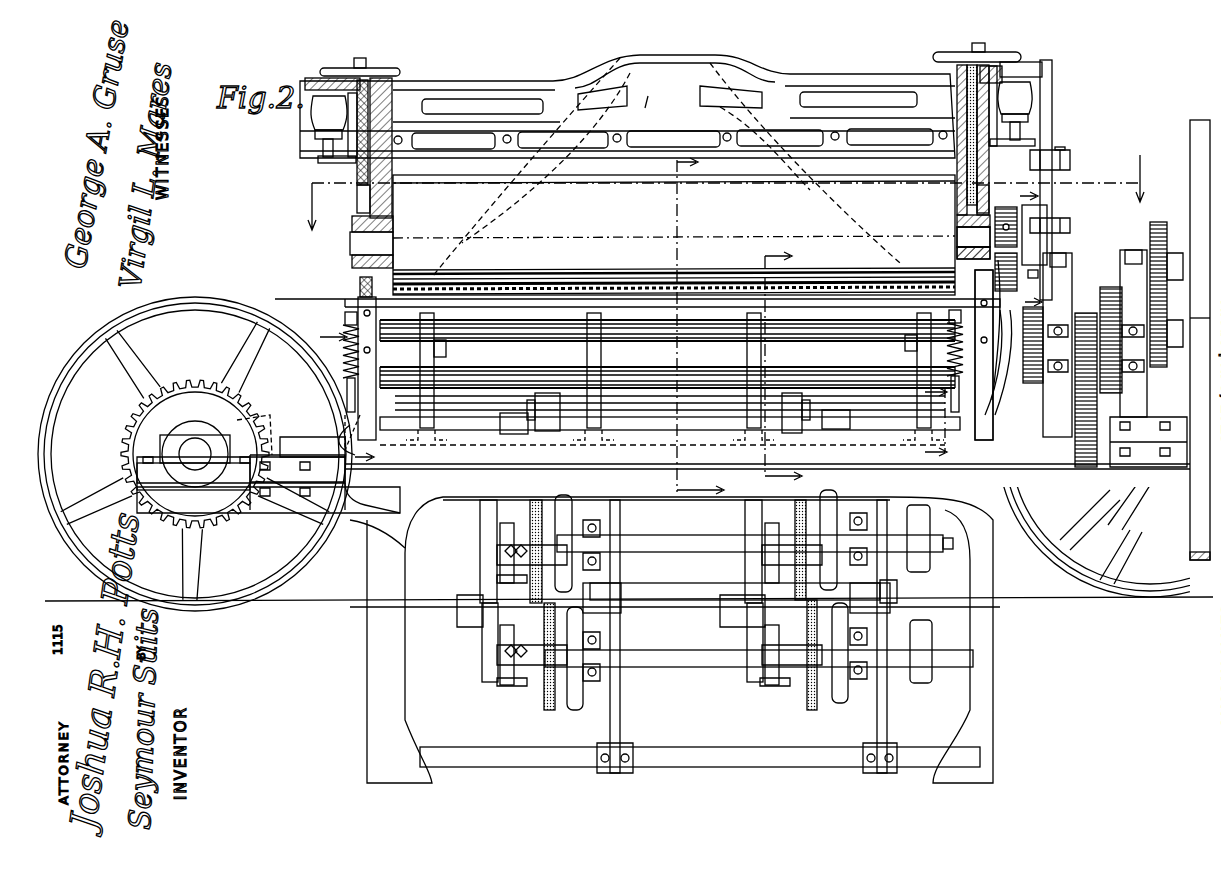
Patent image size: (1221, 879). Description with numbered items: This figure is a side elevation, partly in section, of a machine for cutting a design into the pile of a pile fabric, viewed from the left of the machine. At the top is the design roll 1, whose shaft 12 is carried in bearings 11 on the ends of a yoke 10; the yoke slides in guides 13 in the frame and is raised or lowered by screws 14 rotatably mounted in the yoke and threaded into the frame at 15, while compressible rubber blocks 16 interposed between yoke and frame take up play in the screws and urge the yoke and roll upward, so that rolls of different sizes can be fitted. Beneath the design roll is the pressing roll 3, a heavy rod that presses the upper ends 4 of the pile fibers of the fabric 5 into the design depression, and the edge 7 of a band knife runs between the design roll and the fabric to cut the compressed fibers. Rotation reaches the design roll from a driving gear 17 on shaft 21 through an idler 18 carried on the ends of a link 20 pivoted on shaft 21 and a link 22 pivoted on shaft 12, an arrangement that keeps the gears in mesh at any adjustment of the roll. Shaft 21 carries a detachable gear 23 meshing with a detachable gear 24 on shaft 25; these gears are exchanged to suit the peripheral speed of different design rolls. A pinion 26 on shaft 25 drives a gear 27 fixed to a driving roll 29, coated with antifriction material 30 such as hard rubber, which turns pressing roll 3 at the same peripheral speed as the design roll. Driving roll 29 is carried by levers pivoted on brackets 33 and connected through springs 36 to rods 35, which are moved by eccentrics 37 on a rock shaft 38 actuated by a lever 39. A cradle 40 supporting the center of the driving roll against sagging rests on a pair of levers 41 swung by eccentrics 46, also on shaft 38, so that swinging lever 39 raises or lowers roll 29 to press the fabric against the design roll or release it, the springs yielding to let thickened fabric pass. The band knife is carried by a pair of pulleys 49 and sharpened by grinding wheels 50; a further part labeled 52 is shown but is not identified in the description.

The design roll 1 is at (674, 176).
The pressing roll 3 is at (723, 203).
The upper ends of the pile fibers 4 is at (709, 327).
The pile fabric 5 is at (792, 366).
The knife edge 7 is at (1024, 247).
The yoke 10 is at (785, 90).
The bearings 11 is at (358, 268).
The shaft 12 is at (385, 242).
The guides 13 is at (357, 200).
The screws 14 is at (357, 160).
The threaded portion of machine frame 15 is at (345, 140).
The compressible rubber blocks 16 is at (671, 110).
The driving gear 17 is at (1040, 266).
The idler 18 is at (973, 236).
The link 20 is at (1050, 246).
The shaft 21 is at (1075, 345).
The link 22 is at (1052, 222).
The detachable gear 23 is at (1158, 222).
The detachable gear 24 is at (1150, 365).
The shaft 25 is at (1186, 333).
The pinion 26 is at (1022, 416).
The gear 27 is at (1060, 376).
The driving roll 29 is at (885, 358).
The antifriction material 30 is at (670, 398).
The brackets 33 is at (436, 395).
The rods 35 is at (350, 390).
The springs 36 is at (368, 352).
The eccentrics 37 is at (400, 404).
The rock shaft 38 is at (640, 418).
The lever 39 is at (975, 309).
The cradle 40 is at (670, 386).
The levers 41 is at (550, 435).
The eccentrics 46 is at (548, 410).
The pulleys 49 is at (300, 572).
The grinding wheels 50 is at (532, 520).
The beam slot 52 is at (620, 98).